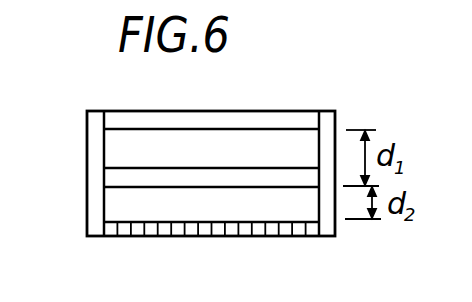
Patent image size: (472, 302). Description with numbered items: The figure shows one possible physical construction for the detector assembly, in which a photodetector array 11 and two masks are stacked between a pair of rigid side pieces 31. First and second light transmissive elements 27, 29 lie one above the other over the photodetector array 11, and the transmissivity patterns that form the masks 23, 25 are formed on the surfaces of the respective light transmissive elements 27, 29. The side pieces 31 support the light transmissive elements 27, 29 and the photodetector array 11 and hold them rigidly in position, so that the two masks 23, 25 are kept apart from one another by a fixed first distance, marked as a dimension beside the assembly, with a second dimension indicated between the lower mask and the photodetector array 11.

The photodetector array 11 is at (270, 236).
The mask 23 is at (205, 126).
The mask 25 is at (154, 185).
The first light transmissive element 27 is at (273, 119).
The second light transmissive element 29 is at (130, 177).
The side pieces 31 is at (92, 168).